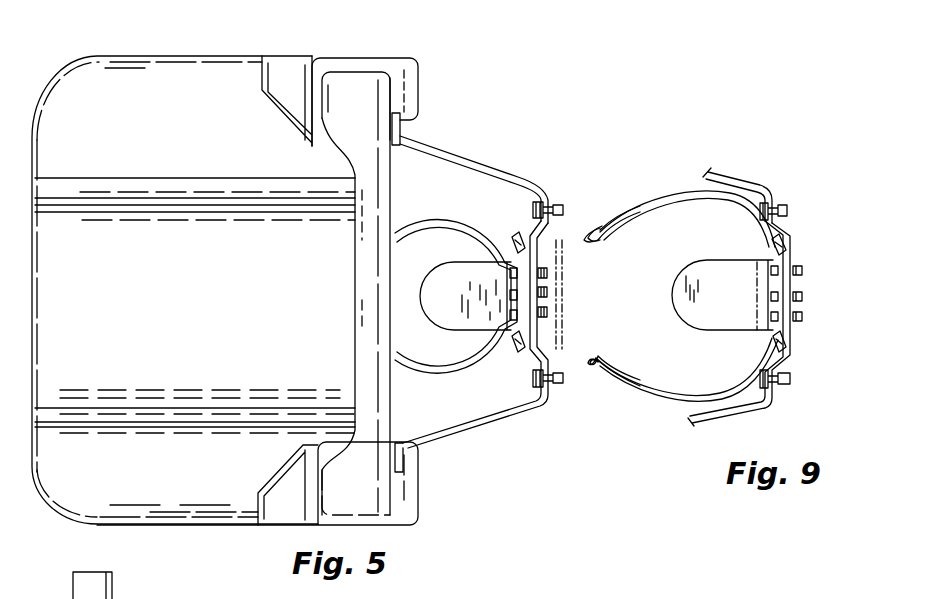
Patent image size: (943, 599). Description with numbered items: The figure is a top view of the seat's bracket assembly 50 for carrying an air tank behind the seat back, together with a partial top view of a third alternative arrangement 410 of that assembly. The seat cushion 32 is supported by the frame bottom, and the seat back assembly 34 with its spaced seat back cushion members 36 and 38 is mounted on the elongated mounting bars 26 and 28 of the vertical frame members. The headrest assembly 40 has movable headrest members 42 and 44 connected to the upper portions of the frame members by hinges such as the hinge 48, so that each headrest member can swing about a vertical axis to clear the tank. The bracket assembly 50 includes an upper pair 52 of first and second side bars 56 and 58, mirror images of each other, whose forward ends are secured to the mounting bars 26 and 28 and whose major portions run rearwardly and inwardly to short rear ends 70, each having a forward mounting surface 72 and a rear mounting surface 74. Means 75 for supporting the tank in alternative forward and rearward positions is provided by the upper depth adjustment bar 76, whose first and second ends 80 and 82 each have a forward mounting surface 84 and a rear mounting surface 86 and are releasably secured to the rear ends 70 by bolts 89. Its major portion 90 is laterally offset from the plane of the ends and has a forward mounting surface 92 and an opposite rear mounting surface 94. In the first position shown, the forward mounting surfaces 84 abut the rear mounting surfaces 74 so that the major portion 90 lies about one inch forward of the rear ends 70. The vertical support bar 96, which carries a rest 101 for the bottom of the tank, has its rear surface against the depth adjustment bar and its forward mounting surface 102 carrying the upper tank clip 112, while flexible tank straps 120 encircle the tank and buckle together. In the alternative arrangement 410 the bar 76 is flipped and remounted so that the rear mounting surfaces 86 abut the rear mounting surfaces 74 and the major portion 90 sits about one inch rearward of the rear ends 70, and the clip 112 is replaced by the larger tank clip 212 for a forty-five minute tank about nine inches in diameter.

In FIG. 5, the mounting bar 26 is at (405, 440).
In FIG. 5, the mounting bar 28 is at (400, 148).
In FIG. 5, the seat cushion 32 is at (108, 136).
In FIG. 5, the seat back assembly 34 is at (302, 55).
In FIG. 5, the seat back cushion member 36 is at (270, 505).
In FIG. 5, the seat back cushion member 38 is at (270, 65).
In FIG. 5, the headrest assembly 40 is at (394, 456).
In FIG. 5, the headrest member 42 is at (368, 492).
In FIG. 5, the headrest member 44 is at (372, 105).
In FIG. 5, the hinge 48 is at (391, 125).
In FIG. 5, the bracket assembly 50 is at (480, 138).
In FIG. 5, the upper pair of first and second side bars 52 is at (510, 160).
In FIG. 5, the first side bar 56 is at (460, 426).
In FIG. 9, the first side bar 56 is at (712, 420).
In FIG. 5, the second side bar 58 is at (430, 148).
In FIG. 9, the second side bar 58 is at (715, 172).
In FIG. 5, the rear end 70 is at (533, 210).
In FIG. 9, the rear end 70 is at (758, 226).
In FIG. 5, the forward mounting surface 72 is at (545, 192).
In FIG. 9, the forward mounting surface 72 is at (762, 400).
In FIG. 5, the rear mounting surface 74 is at (552, 196).
In FIG. 9, the rear mounting surface 74 is at (778, 190).
In FIG. 5, the means for supporting the tank in alternative forward and rearward positions 75 is at (598, 182).
In FIG. 5, the upper depth adjustment bar 76 is at (556, 358).
In FIG. 9, the upper depth adjustment bar 76 is at (792, 346).
In FIG. 5, the first end 80 is at (615, 367).
In FIG. 9, the first end 80 is at (786, 389).
In FIG. 5, the second end 82 is at (565, 222).
In FIG. 9, the second end 82 is at (788, 202).
In FIG. 5, the forward mounting surface 84 is at (556, 390).
In FIG. 9, the forward mounting surface 84 is at (792, 226).
In FIG. 5, the rear mounting surface 86 is at (562, 192).
In FIG. 9, the rear mounting surface 86 is at (770, 242).
In FIG. 5, the releasable fasteners 89 is at (548, 302).
In FIG. 9, the releasable fasteners 89 is at (790, 212).
In FIG. 5, the major portion 90 is at (556, 348).
In FIG. 9, the major portion 90 is at (795, 336).
In FIG. 5, the forward mounting surface 92 is at (520, 234).
In FIG. 9, the forward mounting surface 92 is at (797, 238).
In FIG. 5, the rear mounting surface 94 is at (602, 238).
In FIG. 9, the rear mounting surface 94 is at (770, 350).
In FIG. 5, the vertical support bar 96 is at (548, 335).
In FIG. 9, the vertical support bar 96 is at (775, 320).
In FIG. 5, the rest 101 is at (428, 300).
In FIG. 9, the forward mounting surface 102 is at (762, 289).
In FIG. 5, the upper tank clip 112 is at (375, 266).
In FIG. 5, the tank straps 120 is at (508, 278).
In FIG. 5, the larger tank clip 212 is at (620, 225).
In FIG. 9, the larger tank clip 212 is at (681, 219).
In FIG. 9, the third alternative arrangement 410 is at (672, 388).